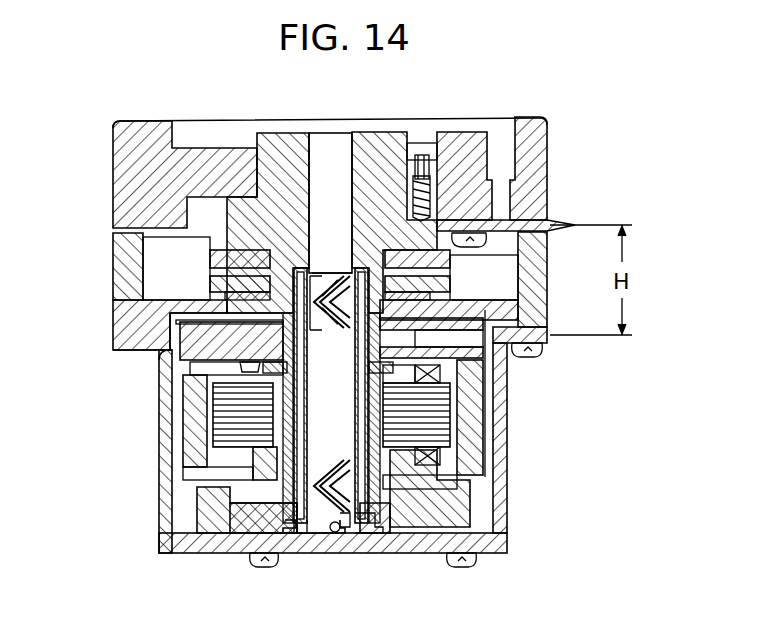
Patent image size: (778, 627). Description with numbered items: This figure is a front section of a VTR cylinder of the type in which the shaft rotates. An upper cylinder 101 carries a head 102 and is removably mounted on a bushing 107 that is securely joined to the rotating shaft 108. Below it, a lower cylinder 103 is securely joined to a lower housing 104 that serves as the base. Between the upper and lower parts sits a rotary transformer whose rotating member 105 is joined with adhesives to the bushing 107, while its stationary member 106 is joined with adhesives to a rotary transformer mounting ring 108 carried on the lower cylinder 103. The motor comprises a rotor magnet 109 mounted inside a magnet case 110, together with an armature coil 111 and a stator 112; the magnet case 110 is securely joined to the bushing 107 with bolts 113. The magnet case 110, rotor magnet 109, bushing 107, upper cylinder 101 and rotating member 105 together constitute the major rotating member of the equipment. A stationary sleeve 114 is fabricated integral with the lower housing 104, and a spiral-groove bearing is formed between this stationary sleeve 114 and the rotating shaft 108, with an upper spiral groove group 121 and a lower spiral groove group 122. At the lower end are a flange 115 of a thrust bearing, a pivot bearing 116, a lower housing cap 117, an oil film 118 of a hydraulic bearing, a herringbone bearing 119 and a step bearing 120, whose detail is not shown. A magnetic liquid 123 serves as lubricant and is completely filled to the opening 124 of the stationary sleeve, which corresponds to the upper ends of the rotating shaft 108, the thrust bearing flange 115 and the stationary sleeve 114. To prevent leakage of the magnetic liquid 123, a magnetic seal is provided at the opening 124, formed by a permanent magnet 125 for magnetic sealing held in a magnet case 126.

The upper cylinder 101 is at (125, 186).
The head 102 is at (545, 214).
The lower cylinder 103 is at (113, 264).
The lower housing 104 is at (505, 396).
The rotating member of rotary transformer 105 is at (212, 260).
The stationary member of rotary transformer 106 is at (214, 286).
The bushing 107 is at (276, 152).
The rotating shaft 108 is at (330, 152).
The rotor magnet 109 is at (192, 406).
The magnet case 110 is at (203, 353).
The armature coil 111 is at (440, 457).
The stator 112 is at (395, 410).
The bolts 113 is at (420, 342).
The stationary sleeve 114 is at (302, 431).
The flange of thrust bearing 115 is at (360, 540).
The pivot bearing 116 is at (331, 547).
The lower housing cap 117 is at (303, 553).
The oil film of hydraulic bearing 118 is at (247, 533).
The herringbone bearing 119 is at (365, 296).
The step bearing 120 is at (370, 517).
The upper spiral groove group 121 is at (333, 272).
The lower spiral groove group 122 is at (345, 517).
The magnetic liquid 123 is at (317, 500).
The opening 124 is at (372, 354).
The permanent magnet 125 is at (296, 376).
The magnet case 126 is at (268, 374).